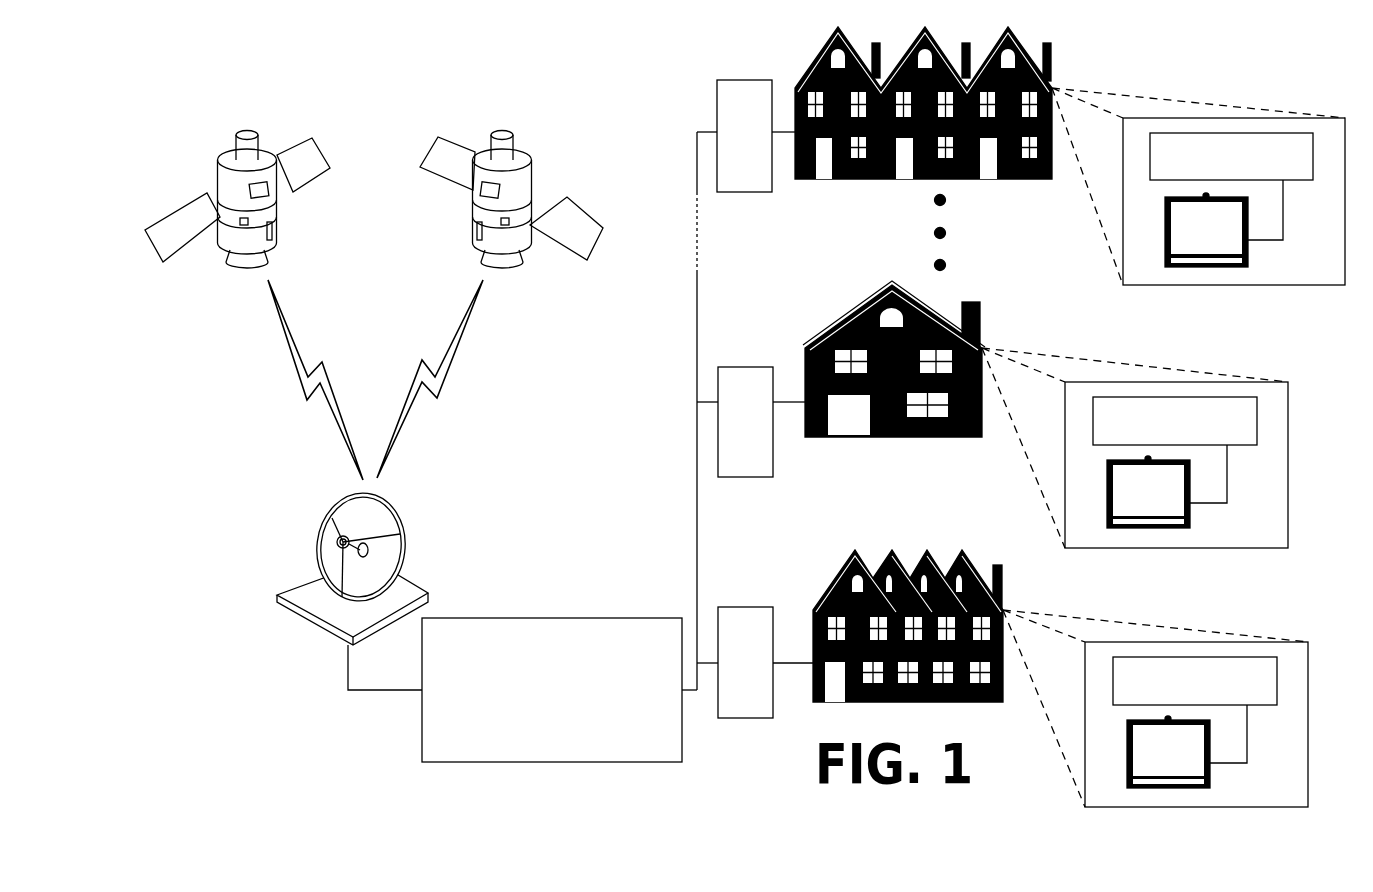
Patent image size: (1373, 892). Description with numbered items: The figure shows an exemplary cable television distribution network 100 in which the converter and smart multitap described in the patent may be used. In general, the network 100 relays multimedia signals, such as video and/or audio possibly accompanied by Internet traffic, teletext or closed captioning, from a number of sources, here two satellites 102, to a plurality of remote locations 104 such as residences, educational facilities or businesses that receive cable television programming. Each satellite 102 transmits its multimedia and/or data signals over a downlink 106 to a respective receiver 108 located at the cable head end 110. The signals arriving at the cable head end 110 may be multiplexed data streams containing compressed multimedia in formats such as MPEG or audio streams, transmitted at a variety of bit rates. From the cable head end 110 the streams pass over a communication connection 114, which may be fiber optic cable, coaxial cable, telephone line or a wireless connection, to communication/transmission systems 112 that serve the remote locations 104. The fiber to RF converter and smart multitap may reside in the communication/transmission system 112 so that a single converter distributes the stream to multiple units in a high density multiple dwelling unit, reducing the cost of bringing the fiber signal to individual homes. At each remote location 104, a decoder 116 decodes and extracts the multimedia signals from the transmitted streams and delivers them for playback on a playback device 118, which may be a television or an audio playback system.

The cable television distribution network 100 is at (258, 76).
The satellite 102 is at (207, 193).
The remote location 104 is at (805, 70).
The downlink 106 is at (283, 325).
The receiver 108 is at (300, 578).
The cable head end 110 is at (668, 617).
The communication/transmission system 112 is at (738, 195).
The communication connection 114 is at (690, 358).
The decoder 116 is at (1287, 183).
The playback device 118 is at (1248, 267).